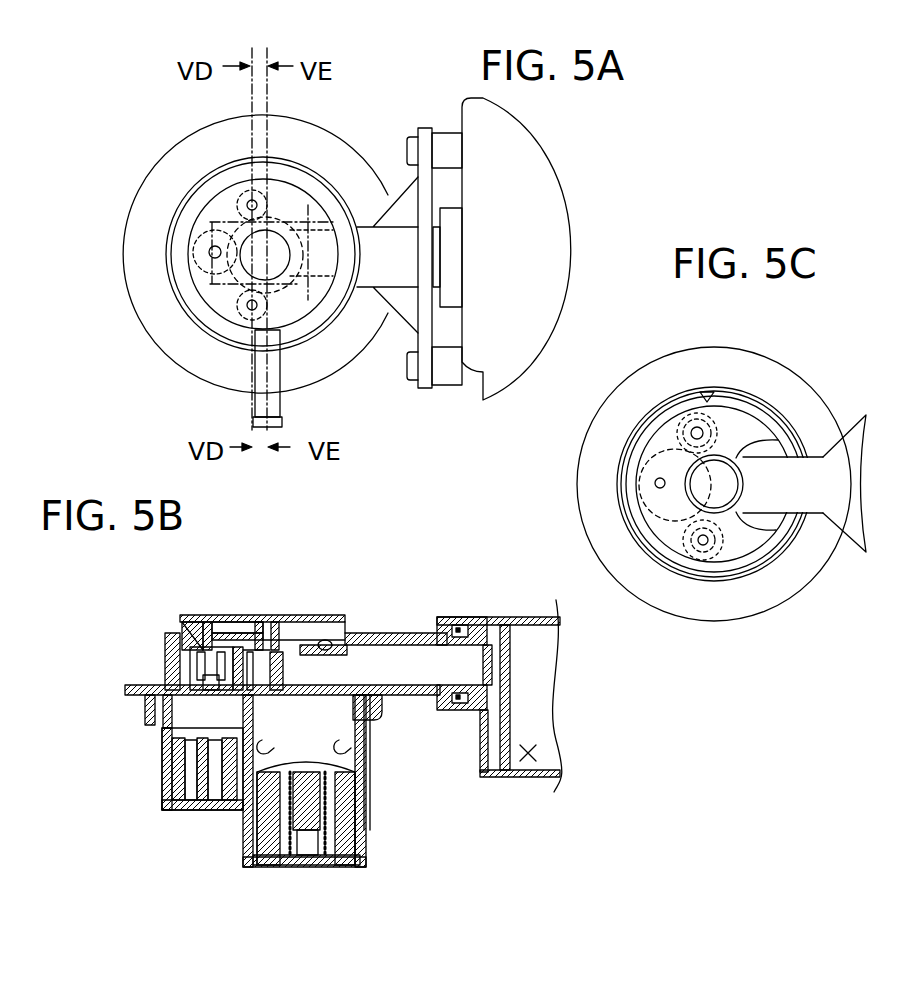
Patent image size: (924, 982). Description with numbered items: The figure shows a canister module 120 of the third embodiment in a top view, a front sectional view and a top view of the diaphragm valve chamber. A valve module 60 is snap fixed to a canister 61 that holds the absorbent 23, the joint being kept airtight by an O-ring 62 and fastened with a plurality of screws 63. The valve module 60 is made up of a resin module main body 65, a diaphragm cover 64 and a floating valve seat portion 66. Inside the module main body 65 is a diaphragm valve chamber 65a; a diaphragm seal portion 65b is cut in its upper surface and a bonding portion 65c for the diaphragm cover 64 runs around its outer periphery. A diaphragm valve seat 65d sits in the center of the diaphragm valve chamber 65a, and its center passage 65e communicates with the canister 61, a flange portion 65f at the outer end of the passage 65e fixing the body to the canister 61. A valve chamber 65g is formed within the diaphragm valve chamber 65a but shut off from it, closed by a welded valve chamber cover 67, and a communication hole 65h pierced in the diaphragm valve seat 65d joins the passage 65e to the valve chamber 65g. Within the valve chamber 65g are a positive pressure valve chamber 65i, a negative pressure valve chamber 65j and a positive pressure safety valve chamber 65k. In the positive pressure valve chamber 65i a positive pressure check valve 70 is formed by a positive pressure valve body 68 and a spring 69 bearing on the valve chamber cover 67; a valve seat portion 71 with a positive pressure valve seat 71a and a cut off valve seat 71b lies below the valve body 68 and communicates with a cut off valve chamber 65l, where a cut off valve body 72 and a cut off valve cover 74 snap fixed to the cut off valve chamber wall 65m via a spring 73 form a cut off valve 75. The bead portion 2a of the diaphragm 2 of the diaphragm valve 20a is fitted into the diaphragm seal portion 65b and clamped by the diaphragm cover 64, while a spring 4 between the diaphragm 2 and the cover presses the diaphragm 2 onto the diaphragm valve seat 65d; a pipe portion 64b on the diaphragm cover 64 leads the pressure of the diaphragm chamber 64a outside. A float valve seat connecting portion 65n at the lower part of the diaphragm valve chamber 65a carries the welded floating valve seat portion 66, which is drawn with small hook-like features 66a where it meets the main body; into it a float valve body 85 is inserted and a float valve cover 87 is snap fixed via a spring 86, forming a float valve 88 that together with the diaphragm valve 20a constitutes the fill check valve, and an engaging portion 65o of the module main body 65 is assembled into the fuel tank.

In FIG. 5B, the diaphragm 2 is at (275, 650).
In FIG. 5B, the bead portion 2a is at (353, 645).
In FIG. 5B, the spring 4 is at (262, 640).
In FIG. 5B, the diaphragm valve 20a is at (277, 616).
In FIG. 5B, the absorbent 23 is at (528, 760).
In FIG. 5A, the valve module 60 is at (330, 125).
In FIG. 5B, the valve module 60 is at (422, 616).
In FIG. 5A, the canister 61 is at (425, 332).
In FIG. 5B, the canister 61 is at (467, 617).
In FIG. 5B, the O-ring 62 is at (460, 635).
In FIG. 5A, the screws 63 is at (407, 370).
In FIG. 5B, the diaphragm cover 64 is at (318, 630).
In FIG. 5B, the diaphragm chamber 64a is at (200, 622).
In FIG. 5A, the pipe portion 64b is at (257, 387).
In FIG. 5B, the module main body 65 is at (410, 690).
In FIG. 5C, the diaphragm valve chamber 65a is at (740, 430).
In FIG. 5B, the diaphragm valve chamber 65a is at (190, 618).
In FIG. 5C, the diaphragm seal portion 65b is at (773, 413).
In FIG. 5B, the diaphragm seal portion 65b is at (345, 632).
In FIG. 5C, the bonding portion 65c is at (688, 418).
In FIG. 5B, the bonding portion 65c is at (350, 640).
In FIG. 5C, the diaphragm valve seat 65d is at (777, 527).
In FIG. 5B, the diaphragm valve seat 65d is at (325, 650).
In FIG. 5C, the center passage 65e is at (715, 483).
In FIG. 5B, the center passage 65e is at (250, 665).
In FIG. 5A, the flange portion 65f is at (427, 262).
In FIG. 5C, the valve chamber 65g is at (660, 447).
In FIG. 5B, the communication hole 65h is at (225, 673).
In FIG. 5C, the positive pressure valve chamber 65i is at (650, 485).
In FIG. 5C, the negative pressure valve chamber 65j is at (683, 412).
In FIG. 5C, the positive pressure safety valve chamber 65k is at (697, 545).
In FIG. 5B, the cut off valve chamber 65l is at (355, 747).
In FIG. 5B, the cut off valve chamber wall 65m is at (162, 795).
In FIG. 5B, the float valve seat connecting portion 65n is at (358, 708).
In FIG. 5B, the engaging portion 65o is at (145, 710).
In FIG. 5B, the floating valve seat portion 66 is at (367, 737).
In FIG. 5B, the retaining hook 66a is at (352, 750).
In FIG. 5C, the valve chamber cover 67 is at (722, 547).
In FIG. 5B, the valve chamber cover 67 is at (192, 622).
In FIG. 5B, the positive pressure valve body 68 is at (182, 677).
In FIG. 5B, the spring 69 is at (190, 665).
In FIG. 5B, the positive pressure check valve 70 is at (165, 668).
In FIG. 5B, the valve seat portion 71 is at (150, 712).
In FIG. 5B, the positive pressure valve seat 71a is at (165, 725).
In FIG. 5B, the cut off valve seat 71b is at (163, 762).
In FIG. 5B, the cut off valve body 72 is at (172, 780).
In FIG. 5B, the spring 73 is at (193, 810).
In FIG. 5B, the cut off valve cover 74 is at (213, 810).
In FIG. 5B, the cut off valve 75 is at (233, 832).
In FIG. 5B, the float valve body 85 is at (350, 802).
In FIG. 5B, the spring 86 is at (323, 845).
In FIG. 5B, the float valve cover 87 is at (347, 867).
In FIG. 5B, the float valve 88 is at (377, 820).
In FIG. 5A, the canister module 120 is at (130, 323).